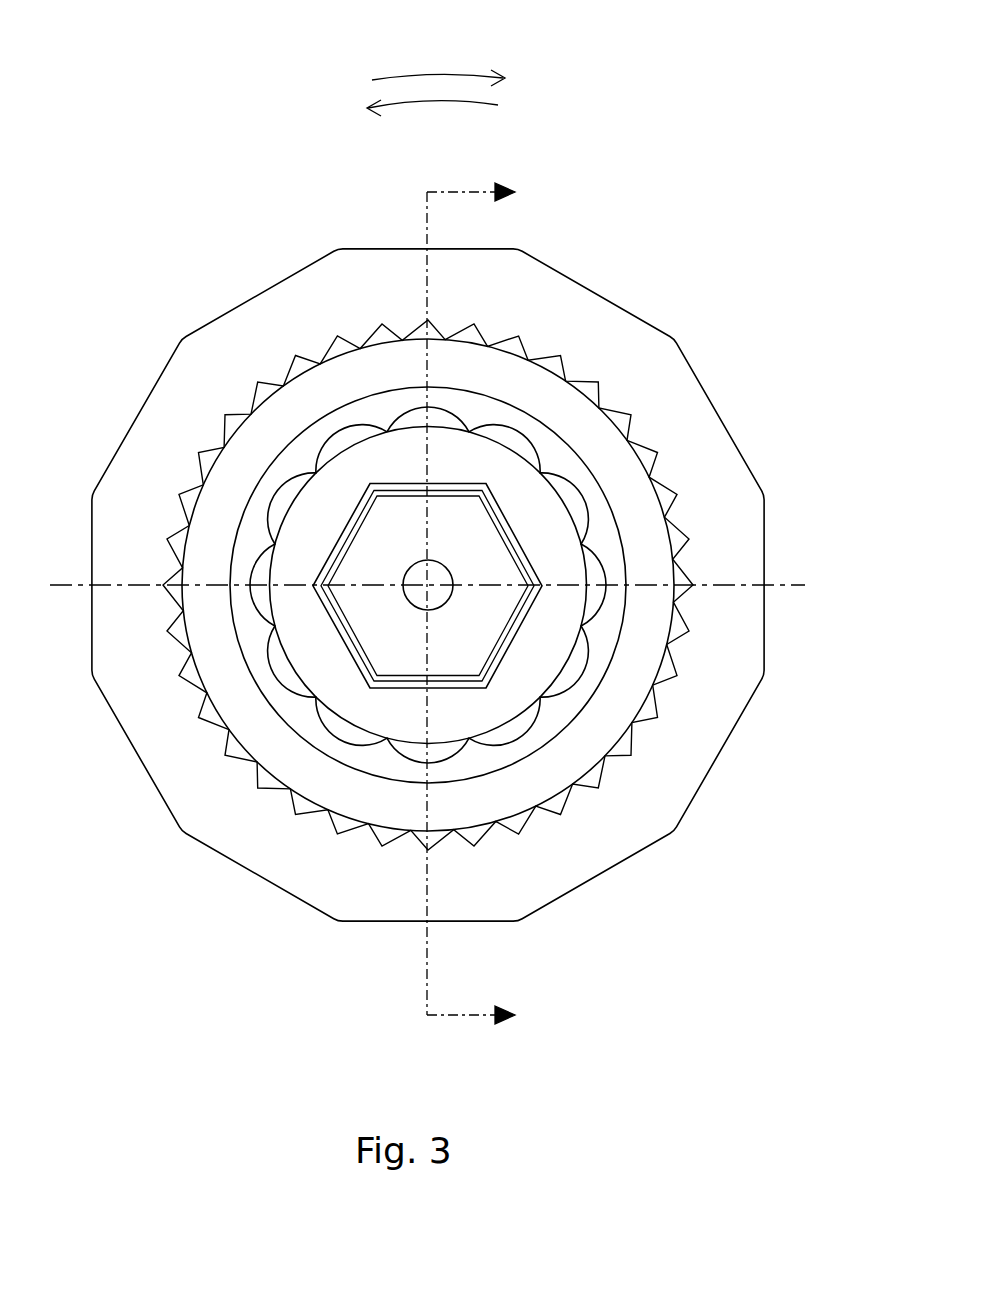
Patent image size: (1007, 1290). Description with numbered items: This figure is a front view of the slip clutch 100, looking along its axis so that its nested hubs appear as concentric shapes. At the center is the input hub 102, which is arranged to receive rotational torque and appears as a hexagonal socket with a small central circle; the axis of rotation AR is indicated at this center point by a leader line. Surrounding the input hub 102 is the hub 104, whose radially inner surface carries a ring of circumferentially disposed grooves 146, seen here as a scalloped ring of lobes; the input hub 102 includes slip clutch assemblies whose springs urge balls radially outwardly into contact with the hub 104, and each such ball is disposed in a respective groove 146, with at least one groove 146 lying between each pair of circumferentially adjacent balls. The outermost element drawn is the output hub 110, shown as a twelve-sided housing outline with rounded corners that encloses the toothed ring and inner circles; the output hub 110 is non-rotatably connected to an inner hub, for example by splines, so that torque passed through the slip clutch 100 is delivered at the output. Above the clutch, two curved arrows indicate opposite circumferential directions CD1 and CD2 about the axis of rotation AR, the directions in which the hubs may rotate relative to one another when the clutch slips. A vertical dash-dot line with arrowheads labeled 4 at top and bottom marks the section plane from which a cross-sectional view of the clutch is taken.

The slip clutch 100 is at (787, 118).
The input hub 102 is at (378, 620).
The hub 104 is at (337, 497).
The output hub 110 is at (597, 295).
The grooves 146 is at (572, 498).
The axis of rotation AR is at (428, 586).
The first circumferential direction CD1 is at (445, 77).
The second circumferential direction CD2 is at (475, 106).
The section line 4- 4 is at (485, 605).